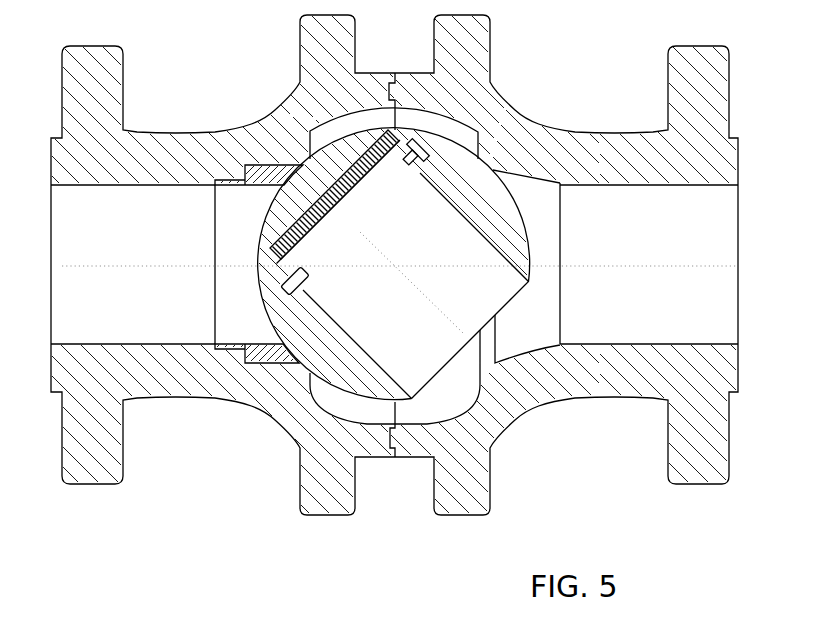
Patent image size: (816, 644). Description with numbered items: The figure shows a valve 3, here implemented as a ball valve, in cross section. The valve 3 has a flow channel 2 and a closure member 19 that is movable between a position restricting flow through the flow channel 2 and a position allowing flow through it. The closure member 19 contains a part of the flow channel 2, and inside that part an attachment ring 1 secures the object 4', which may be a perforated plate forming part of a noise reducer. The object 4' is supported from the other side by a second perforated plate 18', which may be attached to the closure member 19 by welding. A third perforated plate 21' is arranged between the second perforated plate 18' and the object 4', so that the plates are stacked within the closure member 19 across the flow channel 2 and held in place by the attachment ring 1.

The attachment ring 1 is at (338, 243).
The flow channel 2 is at (96, 278).
The valve 3 is at (395, 517).
The object 4' is at (308, 151).
The second perforated plate 18' is at (234, 269).
The closure member 19 is at (469, 168).
The third perforated plate 21' is at (275, 231).